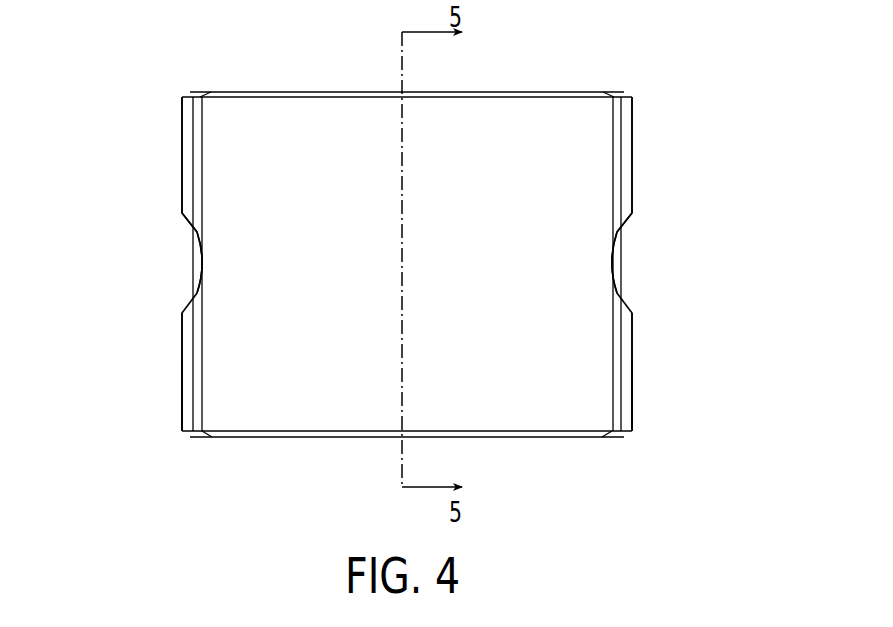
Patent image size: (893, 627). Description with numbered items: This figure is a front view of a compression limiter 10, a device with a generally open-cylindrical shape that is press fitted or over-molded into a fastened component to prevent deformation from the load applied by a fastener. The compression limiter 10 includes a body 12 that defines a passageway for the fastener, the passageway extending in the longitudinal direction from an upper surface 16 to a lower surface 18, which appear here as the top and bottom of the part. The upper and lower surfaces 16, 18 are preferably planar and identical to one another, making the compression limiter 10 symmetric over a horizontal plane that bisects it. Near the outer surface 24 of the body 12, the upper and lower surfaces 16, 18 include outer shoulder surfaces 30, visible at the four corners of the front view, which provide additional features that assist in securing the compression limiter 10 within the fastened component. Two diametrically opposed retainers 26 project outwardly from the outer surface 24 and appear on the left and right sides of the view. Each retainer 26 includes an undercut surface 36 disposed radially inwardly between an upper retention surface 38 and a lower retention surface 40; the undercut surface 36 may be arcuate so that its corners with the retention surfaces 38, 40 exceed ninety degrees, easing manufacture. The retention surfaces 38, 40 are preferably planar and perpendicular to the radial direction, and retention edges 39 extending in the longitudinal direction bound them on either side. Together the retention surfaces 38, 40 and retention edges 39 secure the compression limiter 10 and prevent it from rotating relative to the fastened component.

The compression limiter 10 is at (697, 72).
The body 12 is at (637, 165).
The upper surface 16 is at (566, 90).
The lower surface 18 is at (560, 440).
The outer surface 24 is at (236, 136).
The retainer 26 is at (180, 393).
The outer shoulder surface 30 is at (191, 92).
The undercut surface 36 is at (196, 286).
The upper retention surface 38 is at (184, 200).
The retention edge 39 is at (188, 130).
The lower retention surface 40 is at (184, 352).